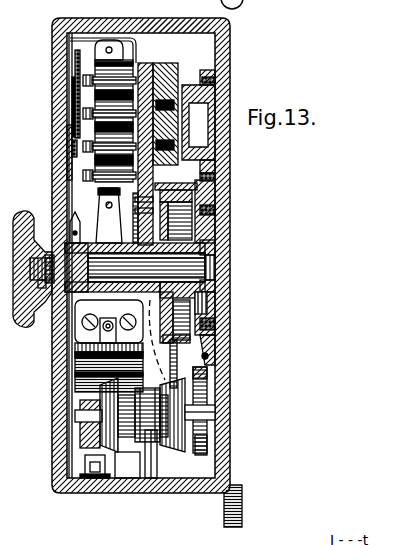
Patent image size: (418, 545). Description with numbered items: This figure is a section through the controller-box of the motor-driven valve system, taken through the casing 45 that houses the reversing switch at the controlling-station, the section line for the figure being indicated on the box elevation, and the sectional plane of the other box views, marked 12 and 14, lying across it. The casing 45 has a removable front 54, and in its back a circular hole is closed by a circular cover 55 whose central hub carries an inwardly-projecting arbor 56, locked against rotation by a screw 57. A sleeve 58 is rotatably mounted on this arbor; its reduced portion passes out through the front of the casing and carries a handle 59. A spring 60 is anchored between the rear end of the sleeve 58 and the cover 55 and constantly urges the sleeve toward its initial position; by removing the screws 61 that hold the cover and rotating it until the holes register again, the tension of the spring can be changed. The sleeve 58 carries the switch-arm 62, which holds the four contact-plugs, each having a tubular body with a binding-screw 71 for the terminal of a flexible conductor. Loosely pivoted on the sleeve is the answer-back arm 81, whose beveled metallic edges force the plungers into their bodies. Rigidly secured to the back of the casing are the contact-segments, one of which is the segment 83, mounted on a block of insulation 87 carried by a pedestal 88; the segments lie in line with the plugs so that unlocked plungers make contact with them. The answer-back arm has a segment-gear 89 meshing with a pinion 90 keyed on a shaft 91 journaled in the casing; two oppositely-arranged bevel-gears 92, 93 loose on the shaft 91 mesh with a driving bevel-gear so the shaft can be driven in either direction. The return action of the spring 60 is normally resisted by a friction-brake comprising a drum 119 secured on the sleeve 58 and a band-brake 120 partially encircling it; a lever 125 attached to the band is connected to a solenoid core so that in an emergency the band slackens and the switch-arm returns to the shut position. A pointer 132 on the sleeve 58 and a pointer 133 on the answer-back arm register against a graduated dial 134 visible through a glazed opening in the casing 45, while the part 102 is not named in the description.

The casing 12 is at (76, 13).
The cover 14 is at (175, 16).
The casing 45 is at (231, 368).
The removable front 54 is at (64, 398).
The circular cover 55 is at (232, 247).
The arbor 56 is at (232, 265).
The screw 57 is at (232, 277).
The sleeve 58 is at (92, 300).
The handle 59 is at (18, 240).
The spring 60 is at (232, 315).
The screws 61 is at (228, 210).
The switch-arm 62 is at (104, 222).
The binding-screw 71 is at (86, 175).
The answer-back arm 81 is at (136, 218).
The contact-segment 83 is at (150, 68).
The block of insulation 87 is at (168, 72).
The pedestal 88 is at (183, 122).
The segment-gear 89 is at (197, 368).
The pinion 90 is at (201, 455).
The shaft 91 is at (212, 411).
The bevel-gear 92 is at (168, 445).
The bevel-gear 93 is at (95, 455).
The post 102 is at (157, 462).
The drum 119 is at (188, 200).
The band-brake 120 is at (218, 176).
The lever 125 is at (172, 362).
The pointer 132 is at (75, 152).
The pointer 133 is at (77, 70).
The graduated dial 134 is at (78, 93).